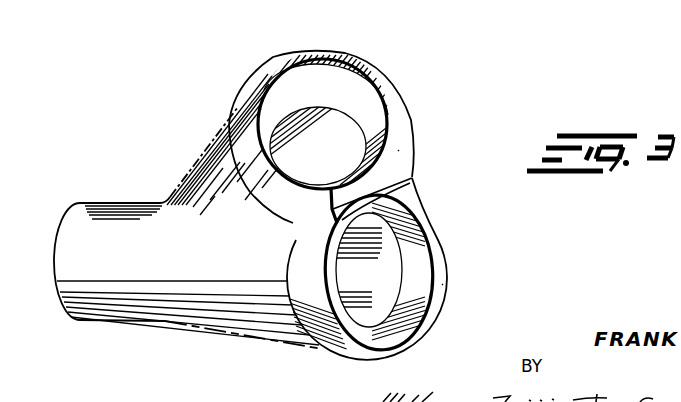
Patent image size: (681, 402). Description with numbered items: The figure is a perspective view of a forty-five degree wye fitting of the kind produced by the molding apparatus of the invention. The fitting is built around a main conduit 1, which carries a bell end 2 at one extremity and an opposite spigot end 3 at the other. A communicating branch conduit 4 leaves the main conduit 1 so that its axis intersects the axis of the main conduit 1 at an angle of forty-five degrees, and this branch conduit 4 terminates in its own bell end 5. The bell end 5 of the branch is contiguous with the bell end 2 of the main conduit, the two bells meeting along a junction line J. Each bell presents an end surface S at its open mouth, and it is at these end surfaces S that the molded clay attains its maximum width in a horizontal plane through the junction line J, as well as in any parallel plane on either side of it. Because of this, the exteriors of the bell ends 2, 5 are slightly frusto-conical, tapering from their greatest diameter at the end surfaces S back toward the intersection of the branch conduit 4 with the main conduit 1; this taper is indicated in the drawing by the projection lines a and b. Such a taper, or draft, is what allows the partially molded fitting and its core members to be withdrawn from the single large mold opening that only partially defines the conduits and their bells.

The main conduit 1 is at (160, 323).
The bell end 2 is at (353, 355).
The spigot end 3 is at (57, 289).
The branch conduit 4 is at (192, 173).
The bell end 5 is at (347, 63).
The projection line a is at (213, 136).
The projection line b is at (240, 340).
The end surface S is at (398, 150).
The junction line J is at (416, 188).